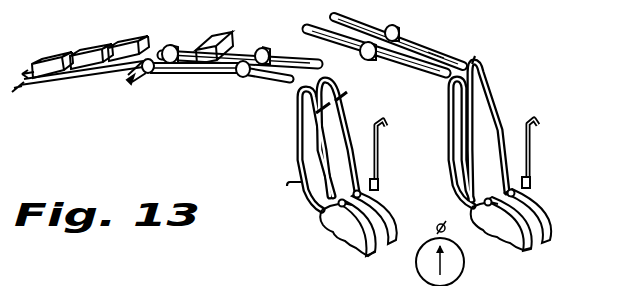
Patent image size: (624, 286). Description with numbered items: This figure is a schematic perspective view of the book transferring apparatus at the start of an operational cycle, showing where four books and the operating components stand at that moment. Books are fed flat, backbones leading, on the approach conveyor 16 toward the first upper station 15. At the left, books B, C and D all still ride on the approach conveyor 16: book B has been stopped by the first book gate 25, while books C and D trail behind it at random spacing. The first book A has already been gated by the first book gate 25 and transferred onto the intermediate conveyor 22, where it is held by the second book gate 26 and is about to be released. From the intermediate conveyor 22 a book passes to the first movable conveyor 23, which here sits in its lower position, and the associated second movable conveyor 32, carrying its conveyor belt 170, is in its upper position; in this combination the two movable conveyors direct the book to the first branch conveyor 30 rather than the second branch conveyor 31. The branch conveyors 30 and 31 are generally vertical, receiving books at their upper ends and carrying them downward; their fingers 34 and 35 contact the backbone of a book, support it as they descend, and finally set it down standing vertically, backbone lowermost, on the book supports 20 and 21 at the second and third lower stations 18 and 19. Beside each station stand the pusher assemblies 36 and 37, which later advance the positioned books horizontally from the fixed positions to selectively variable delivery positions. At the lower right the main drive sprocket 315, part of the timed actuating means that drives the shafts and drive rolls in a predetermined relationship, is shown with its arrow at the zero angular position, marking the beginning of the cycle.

The first upper station 15 is at (44, 41).
The approach conveyor 16 is at (20, 86).
The intermediate conveyor 22 is at (202, 78).
The first movable conveyor 23 is at (293, 48).
The first book gate 25 is at (143, 45).
The second book gate 26 is at (250, 47).
The second movable conveyor 32 is at (381, 17).
The conveyor belt 170 is at (431, 46).
The first branch conveyor 30 is at (285, 124).
The fingers 34 is at (349, 97).
The pusher assembly 36 is at (387, 157).
The second lower station 18 is at (380, 198).
The book support 20 is at (337, 230).
The second branch conveyor 31 is at (497, 89).
The fingers 35 is at (477, 65).
The pusher assembly 37 is at (541, 157).
The third lower station 19 is at (545, 187).
The book support 21 is at (556, 226).
The main drive sprocket 315 is at (455, 267).
The first book A is at (218, 41).
The book B is at (131, 43).
The book C is at (105, 48).
The book D is at (63, 60).